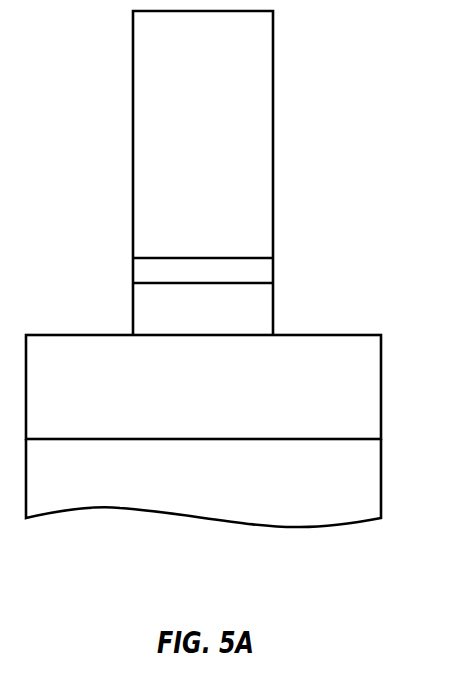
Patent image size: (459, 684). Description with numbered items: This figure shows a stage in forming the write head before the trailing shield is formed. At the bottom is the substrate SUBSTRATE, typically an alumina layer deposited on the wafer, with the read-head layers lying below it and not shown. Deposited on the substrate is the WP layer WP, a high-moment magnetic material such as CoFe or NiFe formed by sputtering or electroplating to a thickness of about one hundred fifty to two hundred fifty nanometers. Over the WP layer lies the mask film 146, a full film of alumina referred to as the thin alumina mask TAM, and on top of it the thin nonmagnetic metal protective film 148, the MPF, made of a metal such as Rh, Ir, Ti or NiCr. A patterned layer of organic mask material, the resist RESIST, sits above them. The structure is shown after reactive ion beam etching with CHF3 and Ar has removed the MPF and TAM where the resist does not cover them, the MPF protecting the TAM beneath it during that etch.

The metal protective film 148 is at (208, 260).
The mask film 146 is at (164, 309).
The metal protective film MPF is at (262, 273).
The thin alumina mask TAM is at (203, 309).
The resist RESIST is at (203, 173).
The WP layer WP is at (203, 387).
The substrate SUBSTRATE is at (203, 483).